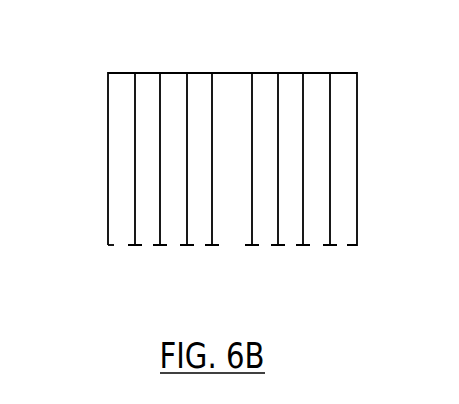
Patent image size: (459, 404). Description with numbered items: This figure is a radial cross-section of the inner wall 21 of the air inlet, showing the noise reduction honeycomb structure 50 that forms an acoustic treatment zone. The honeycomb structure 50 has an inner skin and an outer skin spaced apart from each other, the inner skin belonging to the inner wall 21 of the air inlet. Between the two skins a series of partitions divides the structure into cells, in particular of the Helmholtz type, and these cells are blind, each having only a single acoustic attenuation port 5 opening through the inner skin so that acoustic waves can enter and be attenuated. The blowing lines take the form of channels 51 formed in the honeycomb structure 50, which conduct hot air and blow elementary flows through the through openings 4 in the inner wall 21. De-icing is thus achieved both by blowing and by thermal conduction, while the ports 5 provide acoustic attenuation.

The noise reduction honeycomb structure 50 is at (86, 152).
The channels 51 is at (238, 157).
The acoustic attenuation ports 5 is at (124, 268).
The through openings 4 is at (236, 268).
The inner wall 21 is at (113, 248).